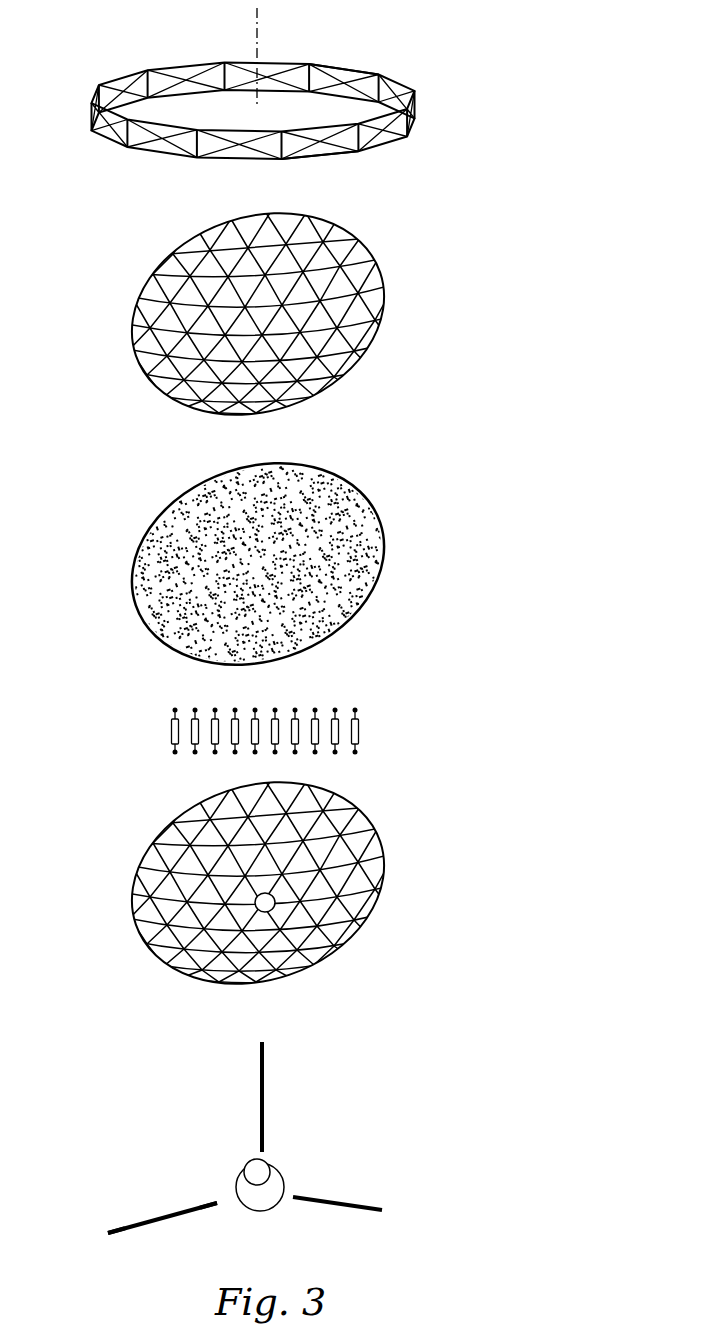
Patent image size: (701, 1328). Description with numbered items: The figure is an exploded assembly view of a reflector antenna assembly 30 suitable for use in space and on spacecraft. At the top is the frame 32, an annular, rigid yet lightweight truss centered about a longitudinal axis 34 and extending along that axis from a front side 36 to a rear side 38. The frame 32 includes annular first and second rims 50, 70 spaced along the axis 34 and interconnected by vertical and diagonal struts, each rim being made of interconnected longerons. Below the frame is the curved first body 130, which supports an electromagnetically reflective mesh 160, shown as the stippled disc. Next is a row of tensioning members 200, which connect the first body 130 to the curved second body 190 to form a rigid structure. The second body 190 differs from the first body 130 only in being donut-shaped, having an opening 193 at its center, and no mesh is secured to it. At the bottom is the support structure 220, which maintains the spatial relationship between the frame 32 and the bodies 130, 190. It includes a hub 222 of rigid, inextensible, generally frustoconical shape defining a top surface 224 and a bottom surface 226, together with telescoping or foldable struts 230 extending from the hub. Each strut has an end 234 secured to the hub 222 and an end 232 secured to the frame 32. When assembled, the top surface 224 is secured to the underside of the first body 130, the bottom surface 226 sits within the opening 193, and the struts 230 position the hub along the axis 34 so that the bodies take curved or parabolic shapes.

The reflector antenna assembly 30 is at (342, 103).
The frame 32 is at (271, 103).
The longitudinal axis 34 is at (256, 104).
The front side 36 is at (113, 72).
The rear side 38 is at (392, 148).
The first rim 50 is at (345, 63).
The second rim 70 is at (318, 159).
The first body 130 is at (117, 320).
The reflective mesh 160 is at (117, 570).
The second body 190 is at (243, 877).
The opening 193 is at (258, 905).
The tensioning members 200 is at (372, 734).
The support structure 220 is at (252, 1150).
The hub 222 is at (268, 1206).
The top surface 224 is at (258, 1170).
The bottom surface 226 is at (248, 1208).
The struts 230 is at (162, 1213).
The strut end 232 is at (108, 1229).
The strut end 234 is at (216, 1201).